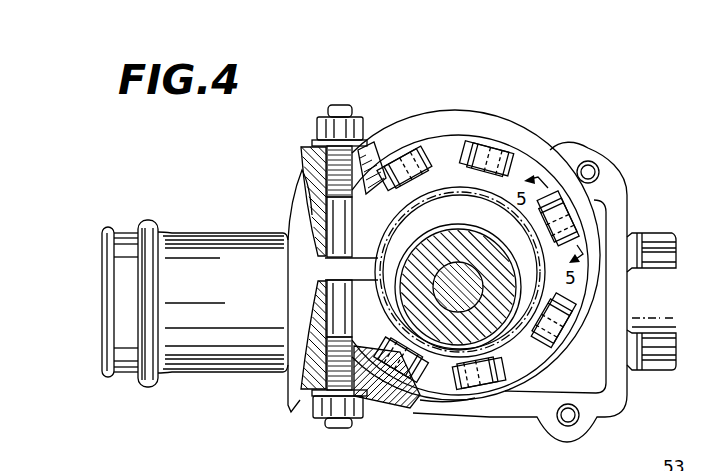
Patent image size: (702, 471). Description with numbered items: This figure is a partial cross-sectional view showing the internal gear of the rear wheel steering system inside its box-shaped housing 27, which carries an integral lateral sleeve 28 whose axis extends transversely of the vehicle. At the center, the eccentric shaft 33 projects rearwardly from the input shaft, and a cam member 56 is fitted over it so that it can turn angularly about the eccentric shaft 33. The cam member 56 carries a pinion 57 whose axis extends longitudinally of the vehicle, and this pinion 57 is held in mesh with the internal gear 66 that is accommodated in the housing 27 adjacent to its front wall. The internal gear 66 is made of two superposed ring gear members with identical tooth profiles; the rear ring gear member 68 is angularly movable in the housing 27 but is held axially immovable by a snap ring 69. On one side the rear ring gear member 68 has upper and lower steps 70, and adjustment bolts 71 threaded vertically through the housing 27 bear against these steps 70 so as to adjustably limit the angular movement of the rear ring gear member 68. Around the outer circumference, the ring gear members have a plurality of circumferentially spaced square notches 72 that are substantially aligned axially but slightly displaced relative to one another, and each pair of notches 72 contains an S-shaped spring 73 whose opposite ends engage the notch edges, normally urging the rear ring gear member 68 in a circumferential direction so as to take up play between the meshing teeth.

The housing 27 is at (512, 128).
The lateral sleeve 28 is at (212, 364).
The eccentric shaft 33 is at (462, 283).
The cam member 56 is at (380, 268).
The pinion 57 is at (446, 226).
The internal gear 66 is at (410, 220).
The rear ring gear member 68 is at (515, 377).
The snap ring 69 is at (437, 400).
The step 70 is at (325, 237).
The adjustment bolt 71 is at (333, 170).
The square notch 72 is at (478, 143).
The S-shaped spring 73 is at (408, 158).